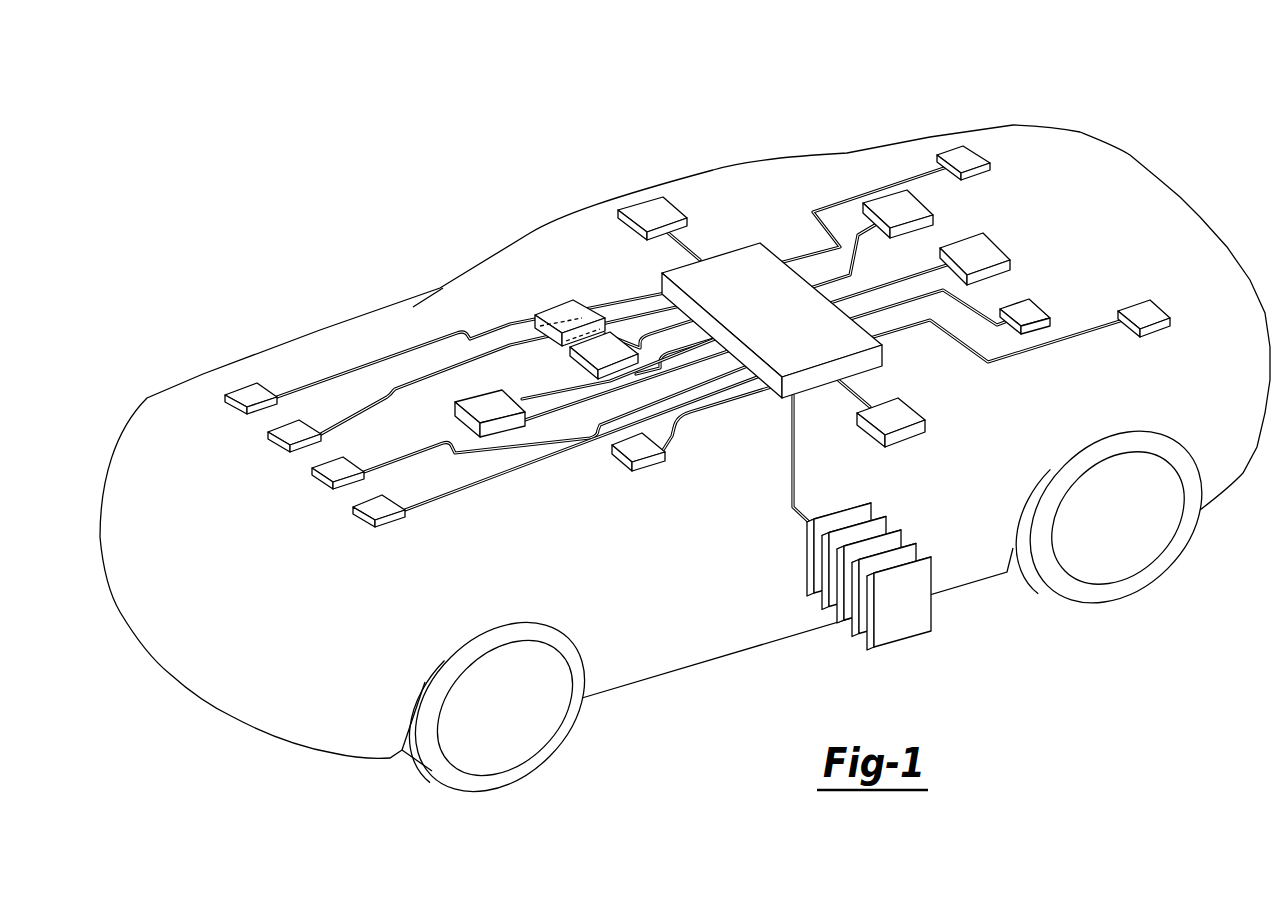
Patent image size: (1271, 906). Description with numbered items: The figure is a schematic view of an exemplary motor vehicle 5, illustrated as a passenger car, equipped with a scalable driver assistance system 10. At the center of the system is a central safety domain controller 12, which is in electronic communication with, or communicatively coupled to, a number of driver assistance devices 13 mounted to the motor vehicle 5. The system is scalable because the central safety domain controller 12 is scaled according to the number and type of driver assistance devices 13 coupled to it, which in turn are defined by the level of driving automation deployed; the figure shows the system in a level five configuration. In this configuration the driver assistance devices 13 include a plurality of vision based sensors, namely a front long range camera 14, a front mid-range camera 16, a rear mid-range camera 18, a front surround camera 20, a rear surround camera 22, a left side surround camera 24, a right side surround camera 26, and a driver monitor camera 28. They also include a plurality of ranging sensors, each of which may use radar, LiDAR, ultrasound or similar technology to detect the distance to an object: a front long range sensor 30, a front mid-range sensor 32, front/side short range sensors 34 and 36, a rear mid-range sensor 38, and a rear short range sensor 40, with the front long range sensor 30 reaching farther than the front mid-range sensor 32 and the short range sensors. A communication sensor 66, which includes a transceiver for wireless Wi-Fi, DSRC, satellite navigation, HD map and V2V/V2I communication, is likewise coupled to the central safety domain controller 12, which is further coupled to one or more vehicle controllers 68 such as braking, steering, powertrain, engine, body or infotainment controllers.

The motor vehicle 5 is at (1177, 213).
The scalable driver assistance system 10 is at (667, 212).
The central safety domain controller 12 is at (745, 270).
The driver assistance devices 13 is at (355, 536).
The front long range camera 14 is at (590, 350).
The front mid-range camera 16 is at (557, 315).
The rear mid-range camera 18 is at (488, 407).
The front surround camera 20 is at (992, 255).
The rear surround camera 22 is at (1033, 312).
The left side surround camera 24 is at (903, 420).
The right side surround camera 26 is at (648, 213).
The driver monitor camera 28 is at (637, 447).
The front long range sensor 30 is at (291, 433).
The front mid-range sensor 32 is at (337, 470).
The front/side short range sensor 34 is at (247, 397).
The front/side short range sensor 36 is at (378, 508).
The rear mid-range sensor 38 is at (1142, 313).
The rear short range sensor 40 is at (965, 158).
The communication sensor 66 is at (895, 208).
The vehicle controllers 68 is at (876, 662).